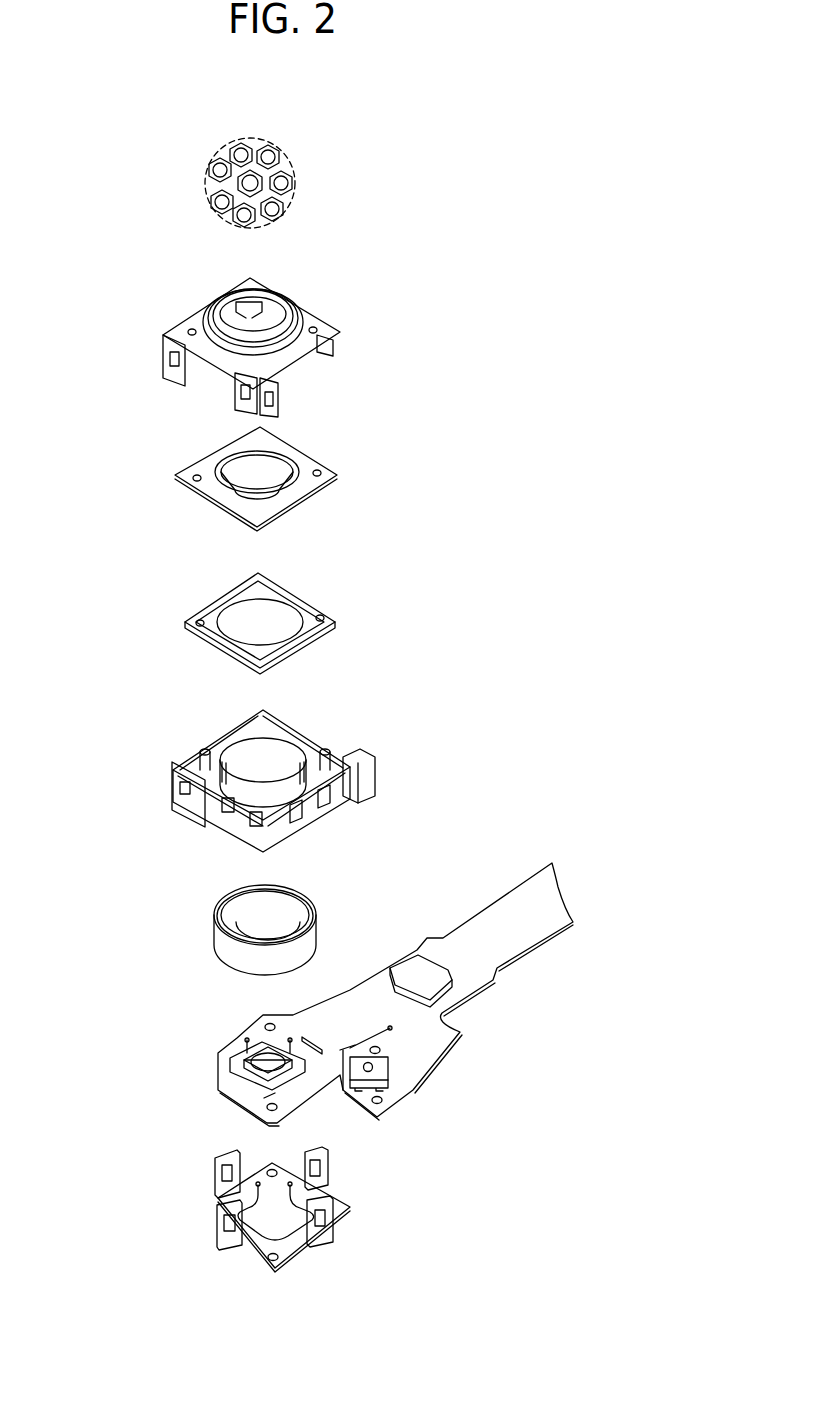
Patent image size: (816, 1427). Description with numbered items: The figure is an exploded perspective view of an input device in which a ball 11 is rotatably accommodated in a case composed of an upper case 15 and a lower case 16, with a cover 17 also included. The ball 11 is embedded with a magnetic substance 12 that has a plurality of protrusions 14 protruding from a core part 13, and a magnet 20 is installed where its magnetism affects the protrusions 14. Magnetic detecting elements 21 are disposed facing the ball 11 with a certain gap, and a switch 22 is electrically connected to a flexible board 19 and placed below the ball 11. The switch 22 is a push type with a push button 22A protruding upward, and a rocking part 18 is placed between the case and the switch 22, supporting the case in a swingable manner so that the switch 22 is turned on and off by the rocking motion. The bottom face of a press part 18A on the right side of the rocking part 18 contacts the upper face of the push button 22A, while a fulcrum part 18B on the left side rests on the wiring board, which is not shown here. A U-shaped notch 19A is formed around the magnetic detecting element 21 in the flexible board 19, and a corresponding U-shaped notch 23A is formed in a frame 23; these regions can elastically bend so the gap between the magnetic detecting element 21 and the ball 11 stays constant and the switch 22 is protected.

The ball 11 is at (205, 187).
The magnetic substance 12 is at (271, 170).
The core part 13 is at (280, 190).
The protrusions 14 is at (277, 152).
The upper case 15 is at (337, 338).
The lower case 16 is at (327, 465).
The cover 17 is at (320, 607).
The rocking part 18 is at (280, 767).
The press part 18A is at (378, 792).
The fulcrum part 18B is at (193, 815).
The flexible board 19 is at (339, 998).
The notch 19A is at (240, 1085).
The magnet 20 is at (215, 927).
The magnetic detecting elements 21 is at (260, 1068).
The switch 22 is at (465, 1061).
The push button 22A is at (373, 1068).
The frame 23 is at (335, 1220).
The notch 23A is at (258, 1237).